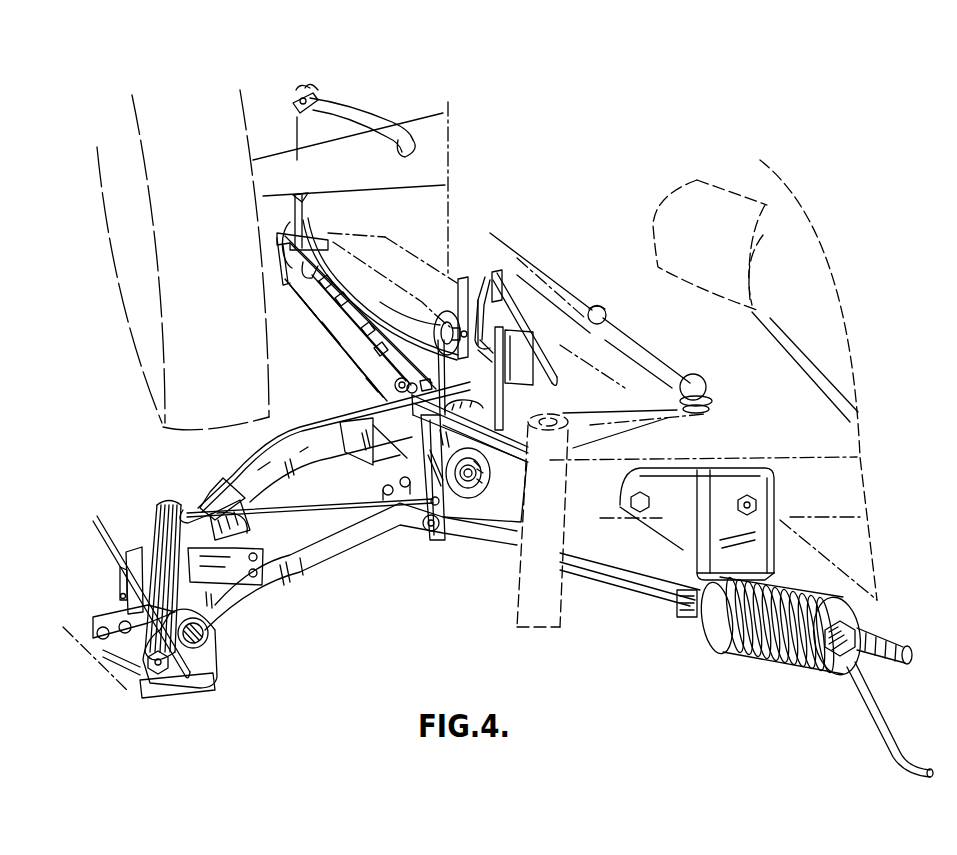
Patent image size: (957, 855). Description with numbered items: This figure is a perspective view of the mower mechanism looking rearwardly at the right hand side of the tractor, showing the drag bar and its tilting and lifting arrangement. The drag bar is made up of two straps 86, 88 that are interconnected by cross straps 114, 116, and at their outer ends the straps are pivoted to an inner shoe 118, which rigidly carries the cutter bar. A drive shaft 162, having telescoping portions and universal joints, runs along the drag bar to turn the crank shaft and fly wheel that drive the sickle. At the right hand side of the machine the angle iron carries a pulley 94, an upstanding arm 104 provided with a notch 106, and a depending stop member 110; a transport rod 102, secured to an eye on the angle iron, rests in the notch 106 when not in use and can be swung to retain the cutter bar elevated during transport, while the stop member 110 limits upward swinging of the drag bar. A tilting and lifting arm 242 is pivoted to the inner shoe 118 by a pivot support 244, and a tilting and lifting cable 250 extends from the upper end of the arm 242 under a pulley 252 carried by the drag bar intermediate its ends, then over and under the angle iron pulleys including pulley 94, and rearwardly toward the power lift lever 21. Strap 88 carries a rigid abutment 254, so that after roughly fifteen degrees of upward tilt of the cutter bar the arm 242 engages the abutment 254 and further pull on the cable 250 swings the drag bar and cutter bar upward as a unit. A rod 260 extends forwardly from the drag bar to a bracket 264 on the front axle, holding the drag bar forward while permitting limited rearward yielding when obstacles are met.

The power lift lever 21 is at (351, 125).
The drag bar strap 86 is at (308, 435).
The drag bar strap 88 is at (317, 522).
The pulley 94 is at (442, 332).
The transport rod 102 is at (537, 333).
The upstanding arm 104 is at (477, 280).
The notch 106 is at (499, 275).
The stop member 110 is at (498, 428).
The cross strap 114 is at (377, 460).
The cross strap 116 is at (217, 480).
The inner shoe 118 is at (214, 676).
The drive shaft 162 is at (350, 333).
The tilting and lifting arm 242 is at (155, 523).
The pivot support 244 is at (138, 680).
The tilting and lifting cable 250 is at (420, 383).
The pulley 252 is at (488, 483).
The rigid abutment 254 is at (233, 580).
The rod 260 is at (634, 580).
The bracket 264 is at (740, 477).